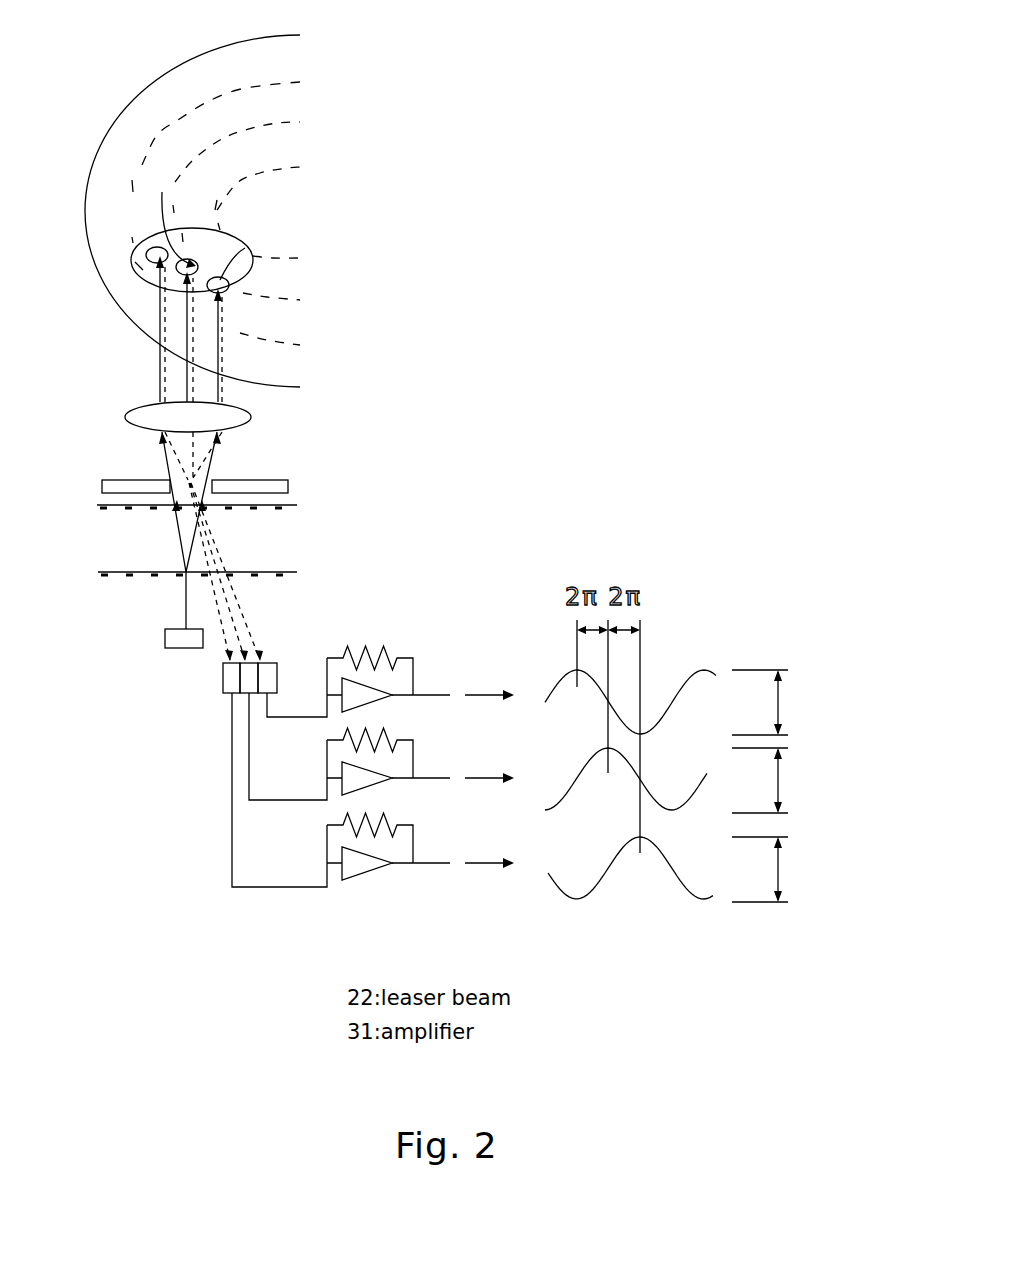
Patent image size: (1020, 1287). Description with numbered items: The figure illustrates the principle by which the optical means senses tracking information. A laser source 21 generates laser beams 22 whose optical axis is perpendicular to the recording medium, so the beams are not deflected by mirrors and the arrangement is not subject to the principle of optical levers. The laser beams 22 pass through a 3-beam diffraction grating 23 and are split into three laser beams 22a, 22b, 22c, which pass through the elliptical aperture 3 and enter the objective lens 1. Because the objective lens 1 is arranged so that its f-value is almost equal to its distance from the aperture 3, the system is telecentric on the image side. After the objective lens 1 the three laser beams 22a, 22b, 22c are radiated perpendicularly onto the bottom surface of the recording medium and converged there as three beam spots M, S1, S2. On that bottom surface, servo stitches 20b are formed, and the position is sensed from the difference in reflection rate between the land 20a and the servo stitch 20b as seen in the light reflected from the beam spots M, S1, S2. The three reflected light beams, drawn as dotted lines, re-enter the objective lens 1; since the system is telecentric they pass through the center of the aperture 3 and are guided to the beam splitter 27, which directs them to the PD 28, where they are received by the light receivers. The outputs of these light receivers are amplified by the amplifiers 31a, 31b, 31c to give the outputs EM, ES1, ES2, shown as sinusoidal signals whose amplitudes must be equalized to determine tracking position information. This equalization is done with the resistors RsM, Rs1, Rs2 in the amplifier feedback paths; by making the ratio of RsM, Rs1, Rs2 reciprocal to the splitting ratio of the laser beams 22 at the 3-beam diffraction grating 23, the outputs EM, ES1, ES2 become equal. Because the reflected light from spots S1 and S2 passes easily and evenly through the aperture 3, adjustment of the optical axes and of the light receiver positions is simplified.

The objective lens 1 is at (252, 413).
The elliptical aperture 3 is at (217, 475).
The land 20a is at (287, 102).
The servo stitch 20b is at (293, 165).
The laser source 21 is at (165, 640).
The laser beams 22 is at (186, 590).
The laser beam 22a is at (186, 373).
The laser beam 22b is at (160, 355).
The laser beam 22c is at (223, 362).
The 3-beam diffraction grating 23 is at (170, 568).
The beam splitter 27 is at (293, 507).
The PD 28 is at (222, 677).
The amplifier 31a is at (340, 780).
The amplifier 31b is at (350, 873).
The amplifier 31c is at (338, 685).
The beam spot M is at (173, 217).
The beam spot S1 is at (247, 250).
The beam spot S2 is at (143, 255).
The resistor Rs1 is at (422, 808).
The resistor Rs2 is at (428, 635).
The resistor RsM is at (422, 723).
The output ES1 is at (813, 869).
The output ES2 is at (813, 702).
The output EM is at (805, 780).